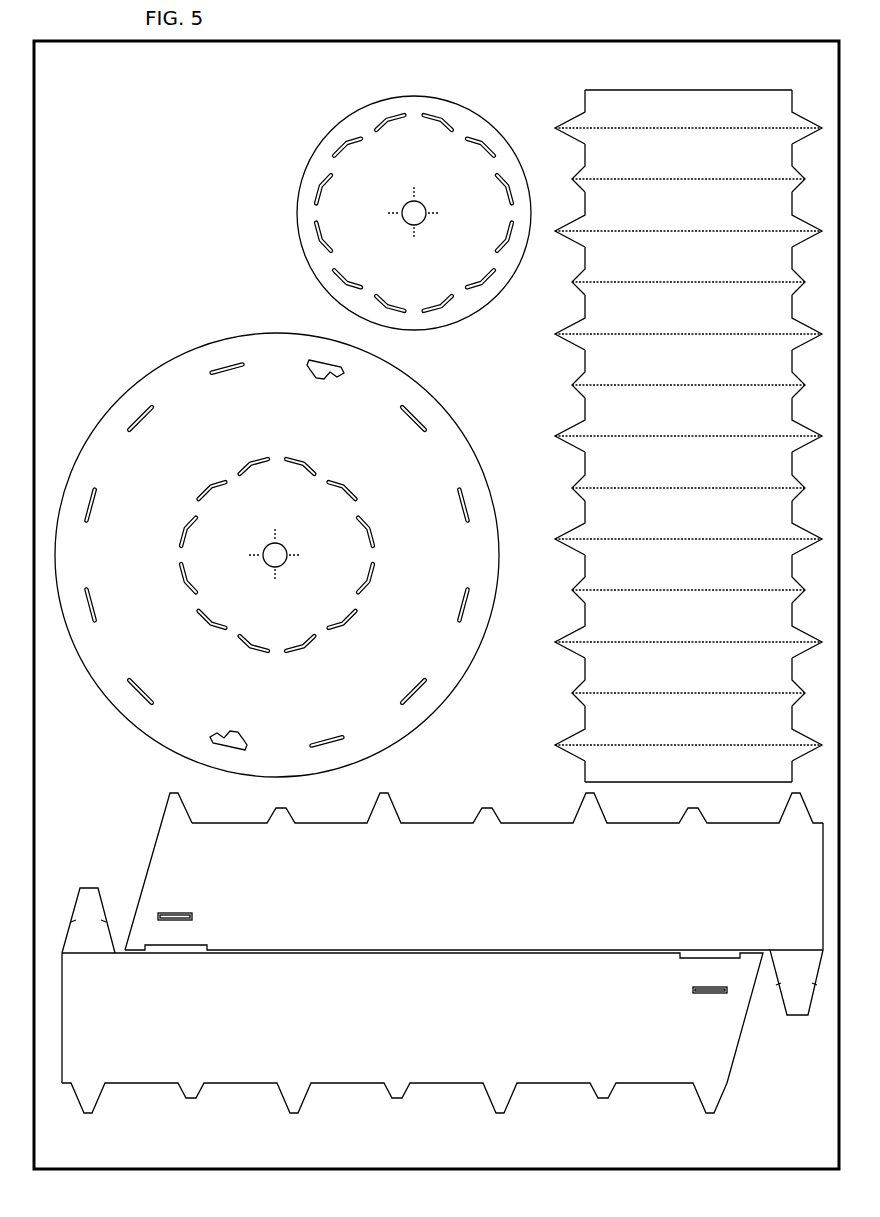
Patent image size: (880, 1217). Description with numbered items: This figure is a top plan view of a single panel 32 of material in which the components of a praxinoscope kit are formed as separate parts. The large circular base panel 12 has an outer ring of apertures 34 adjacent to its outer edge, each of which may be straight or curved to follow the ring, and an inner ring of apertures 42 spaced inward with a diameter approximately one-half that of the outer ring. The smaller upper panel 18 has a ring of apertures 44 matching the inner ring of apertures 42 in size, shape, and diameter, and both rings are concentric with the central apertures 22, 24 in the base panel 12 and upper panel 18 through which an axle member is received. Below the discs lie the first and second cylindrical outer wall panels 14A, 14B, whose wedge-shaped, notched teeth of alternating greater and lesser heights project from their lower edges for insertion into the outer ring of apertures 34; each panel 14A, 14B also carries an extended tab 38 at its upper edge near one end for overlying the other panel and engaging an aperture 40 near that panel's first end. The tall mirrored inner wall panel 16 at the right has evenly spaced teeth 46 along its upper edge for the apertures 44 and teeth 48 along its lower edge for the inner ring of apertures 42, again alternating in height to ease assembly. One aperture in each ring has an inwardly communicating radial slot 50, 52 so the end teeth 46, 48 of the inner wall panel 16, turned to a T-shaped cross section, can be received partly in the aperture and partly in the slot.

The base panel 12 is at (295, 555).
The first cylindrical outer wall panel 14A is at (412, 983).
The second cylindrical outer wall panel 14B is at (466, 894).
The mirrored inner wall panel 16 is at (674, 436).
The upper panel 18 is at (393, 213).
The aperture 22 is at (286, 547).
The aperture 24 is at (404, 206).
The panel 32 is at (153, 196).
The outer ring of apertures 34 is at (470, 602).
The extended tab 38 is at (94, 887).
The aperture 40 is at (173, 912).
The inner ring of apertures 42 is at (378, 521).
The ring of apertures 44 is at (317, 232).
The teeth 46 is at (577, 345).
The teeth 48 is at (800, 349).
The radial slot 50 is at (366, 579).
The radial slot 52 is at (500, 236).